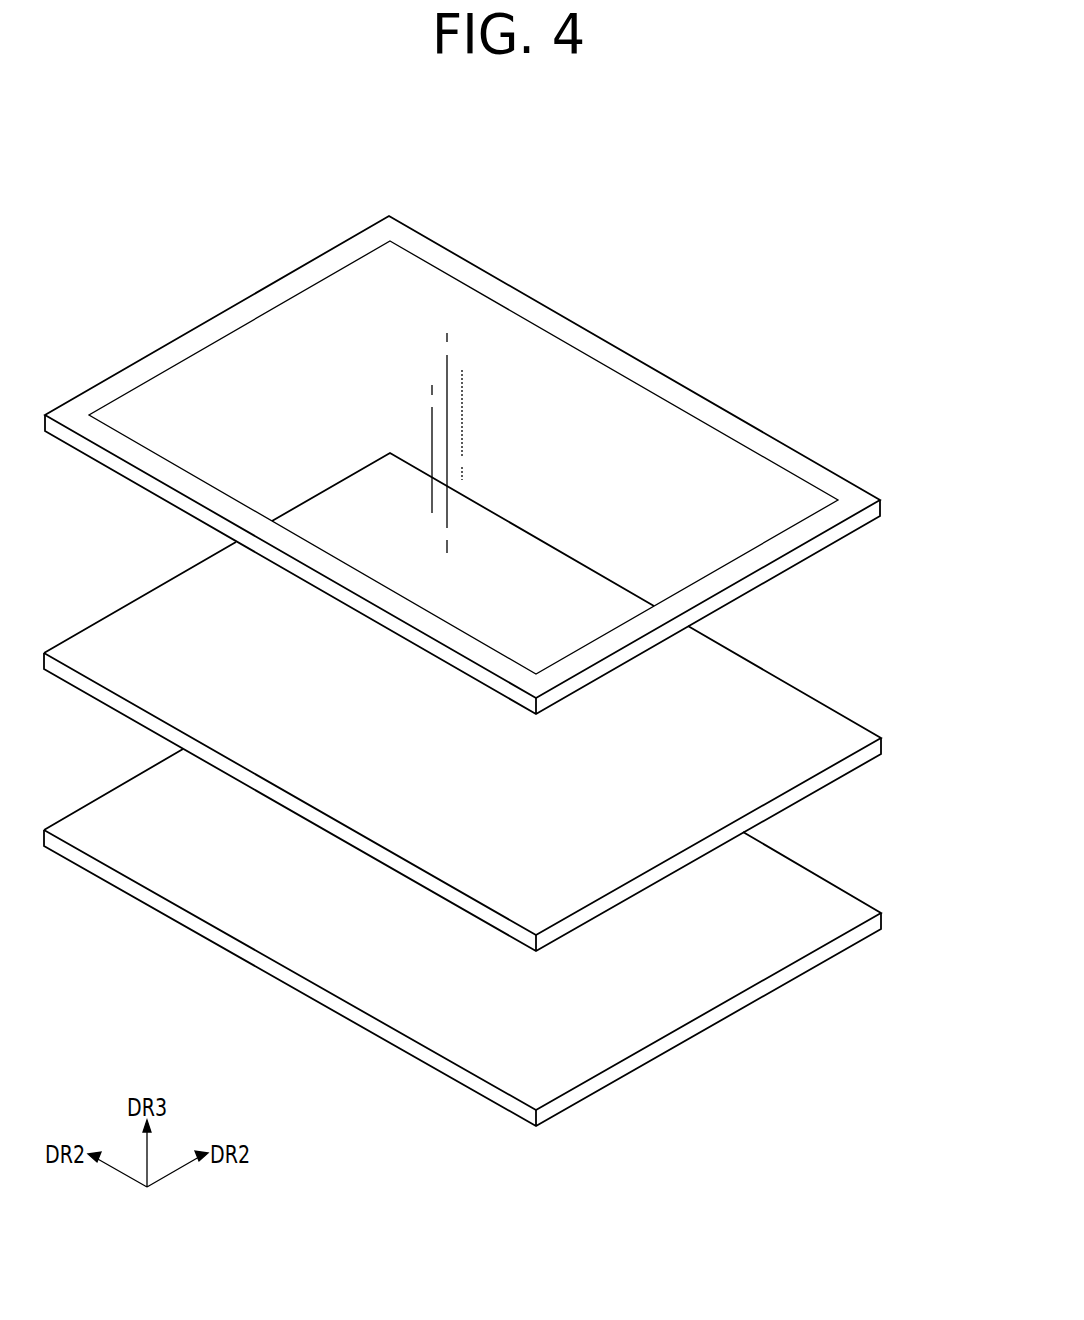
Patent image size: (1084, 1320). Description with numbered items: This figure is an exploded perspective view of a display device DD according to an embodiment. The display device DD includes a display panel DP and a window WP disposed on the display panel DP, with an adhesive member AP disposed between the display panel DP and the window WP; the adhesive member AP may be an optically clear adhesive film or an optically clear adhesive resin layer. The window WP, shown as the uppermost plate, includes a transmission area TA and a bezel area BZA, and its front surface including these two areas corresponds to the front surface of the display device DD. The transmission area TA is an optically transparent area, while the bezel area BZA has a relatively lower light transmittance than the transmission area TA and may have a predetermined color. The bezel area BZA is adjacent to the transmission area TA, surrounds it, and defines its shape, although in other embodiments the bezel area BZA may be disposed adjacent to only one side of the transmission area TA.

The display device DD is at (686, 249).
The window WP is at (872, 508).
The bezel area BZA is at (255, 305).
The transmission area TA is at (199, 378).
The adhesive member AP is at (873, 747).
The display panel DP is at (873, 922).